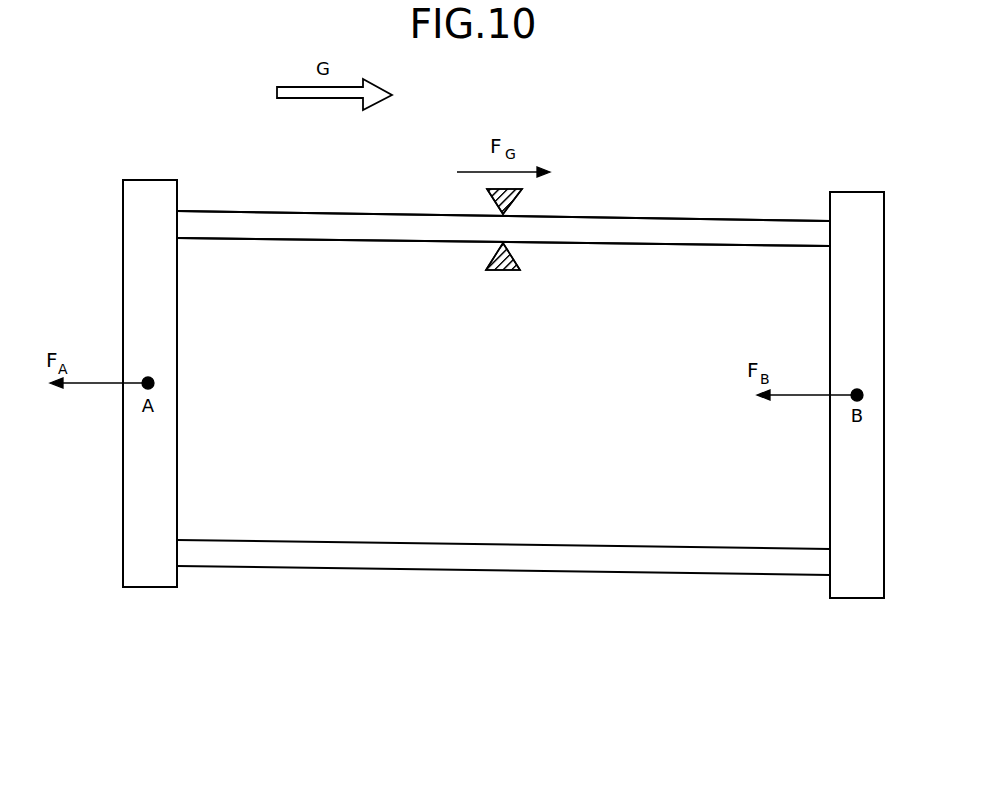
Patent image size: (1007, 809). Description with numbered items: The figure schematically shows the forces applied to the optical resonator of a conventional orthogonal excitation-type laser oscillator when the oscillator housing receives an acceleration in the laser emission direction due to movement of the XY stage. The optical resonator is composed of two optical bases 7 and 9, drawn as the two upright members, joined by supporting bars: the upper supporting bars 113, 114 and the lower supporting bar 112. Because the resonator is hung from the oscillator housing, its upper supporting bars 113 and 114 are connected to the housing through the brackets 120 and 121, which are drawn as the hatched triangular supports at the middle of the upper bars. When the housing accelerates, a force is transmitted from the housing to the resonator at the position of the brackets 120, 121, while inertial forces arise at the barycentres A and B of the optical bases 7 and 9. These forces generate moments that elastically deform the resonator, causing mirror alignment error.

The optical base 7 is at (123, 537).
The optical base 9 is at (884, 502).
The supporting bar 112 is at (652, 572).
The supporting bar 113 is at (770, 220).
The supporting bar 114 is at (503, 228).
The bracket 120 is at (504, 229).
The bracket 121 is at (518, 200).